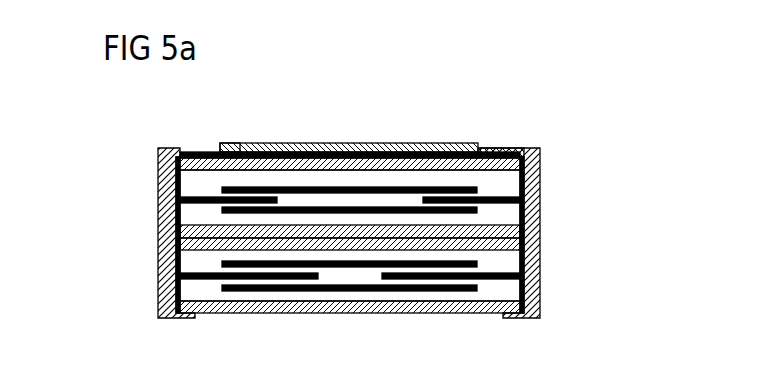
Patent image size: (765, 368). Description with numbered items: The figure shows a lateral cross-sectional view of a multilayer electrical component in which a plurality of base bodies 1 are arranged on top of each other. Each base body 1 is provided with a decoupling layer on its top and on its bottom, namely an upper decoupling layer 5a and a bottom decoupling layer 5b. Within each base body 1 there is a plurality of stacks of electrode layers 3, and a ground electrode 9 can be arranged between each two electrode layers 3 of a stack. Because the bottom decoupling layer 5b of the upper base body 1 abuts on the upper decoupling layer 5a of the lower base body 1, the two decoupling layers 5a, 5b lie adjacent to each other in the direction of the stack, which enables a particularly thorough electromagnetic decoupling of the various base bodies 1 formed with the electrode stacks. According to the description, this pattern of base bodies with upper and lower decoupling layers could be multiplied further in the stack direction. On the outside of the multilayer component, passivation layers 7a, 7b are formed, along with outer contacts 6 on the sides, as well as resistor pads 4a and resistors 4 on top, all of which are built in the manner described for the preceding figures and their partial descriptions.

The base body 1 is at (510, 213).
The electrode layers 3 is at (185, 200).
The resistor 4 is at (352, 153).
The resistor pad 4a is at (237, 157).
The upper decoupling layer 5a is at (490, 165).
The bottom decoupling layer 5b is at (190, 232).
The outer contact 6 is at (158, 272).
The passivation layer 7a is at (455, 152).
The passivation layer 7b is at (205, 153).
The ground electrode 9 is at (297, 207).